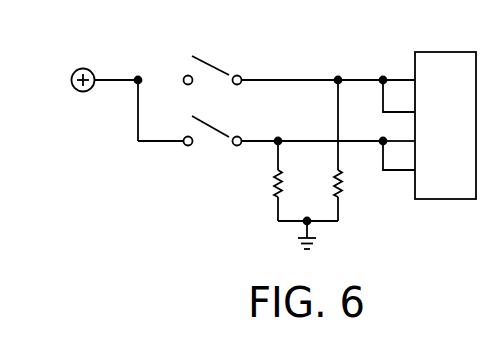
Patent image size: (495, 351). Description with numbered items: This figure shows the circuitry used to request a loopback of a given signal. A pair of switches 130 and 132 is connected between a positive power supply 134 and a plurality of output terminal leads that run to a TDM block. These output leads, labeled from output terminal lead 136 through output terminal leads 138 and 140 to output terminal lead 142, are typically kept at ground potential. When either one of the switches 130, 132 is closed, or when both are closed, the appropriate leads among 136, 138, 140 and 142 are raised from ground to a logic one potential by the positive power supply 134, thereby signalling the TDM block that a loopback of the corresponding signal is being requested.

The switch 130 is at (210, 62).
The switch 132 is at (208, 131).
The positive power supply 134 is at (82, 68).
The output terminal lead 136 is at (400, 79).
The output terminal lead 138 is at (383, 100).
The output terminal lead 140 is at (397, 143).
The output terminal lead 142 is at (400, 171).